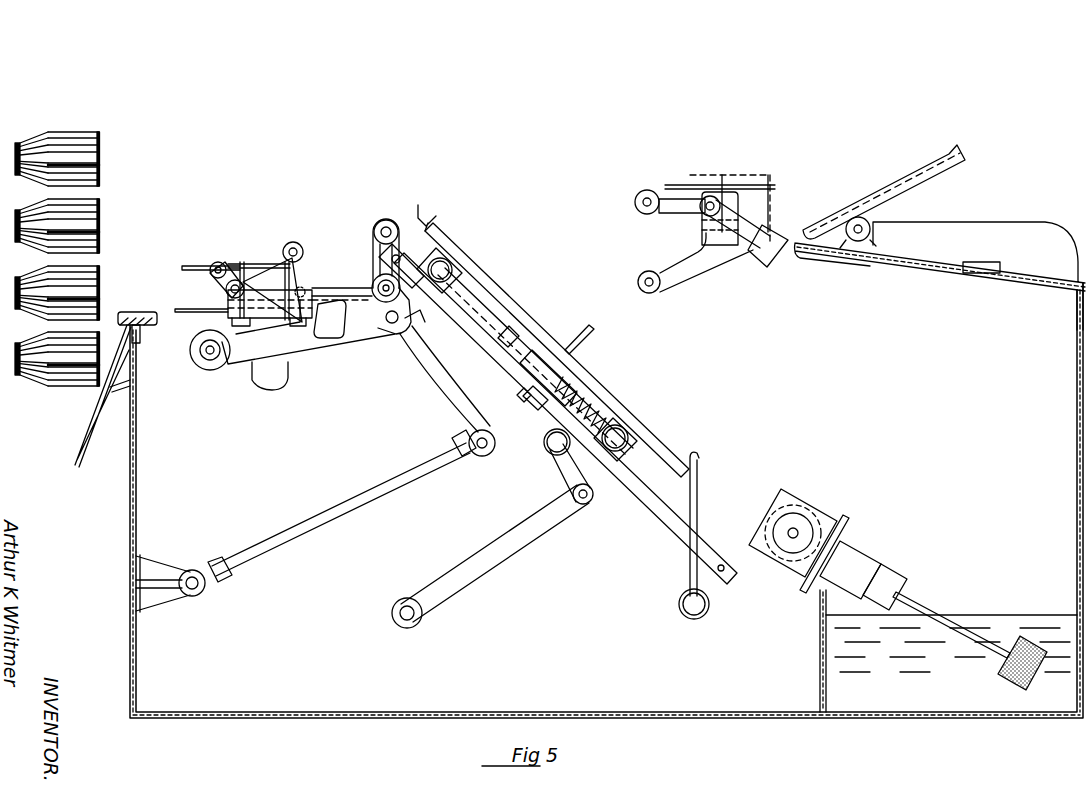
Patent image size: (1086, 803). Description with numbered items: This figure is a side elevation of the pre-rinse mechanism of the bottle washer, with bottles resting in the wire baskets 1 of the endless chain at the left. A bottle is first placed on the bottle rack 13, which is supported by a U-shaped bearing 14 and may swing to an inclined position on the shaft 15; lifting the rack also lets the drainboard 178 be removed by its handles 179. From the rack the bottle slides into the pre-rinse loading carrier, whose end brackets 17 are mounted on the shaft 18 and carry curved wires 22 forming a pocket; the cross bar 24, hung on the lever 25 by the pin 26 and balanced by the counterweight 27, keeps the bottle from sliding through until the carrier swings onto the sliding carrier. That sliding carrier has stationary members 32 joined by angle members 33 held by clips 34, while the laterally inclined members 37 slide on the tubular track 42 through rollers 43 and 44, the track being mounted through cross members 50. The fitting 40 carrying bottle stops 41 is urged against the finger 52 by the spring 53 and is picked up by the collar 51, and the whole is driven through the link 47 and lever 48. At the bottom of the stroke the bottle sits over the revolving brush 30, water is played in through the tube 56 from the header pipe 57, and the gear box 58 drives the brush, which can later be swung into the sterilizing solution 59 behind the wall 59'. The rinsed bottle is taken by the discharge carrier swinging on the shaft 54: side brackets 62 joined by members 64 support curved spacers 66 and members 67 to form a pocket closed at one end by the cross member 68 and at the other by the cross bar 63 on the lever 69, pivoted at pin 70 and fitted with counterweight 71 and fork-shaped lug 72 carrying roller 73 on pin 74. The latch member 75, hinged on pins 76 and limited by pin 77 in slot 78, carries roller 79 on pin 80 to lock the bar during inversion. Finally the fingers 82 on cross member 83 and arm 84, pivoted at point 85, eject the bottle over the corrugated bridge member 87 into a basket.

The wire basket 1 is at (35, 133).
The bottle rack 13 is at (963, 152).
The U-shaped bearing 14 is at (873, 244).
The shaft 15 is at (855, 240).
The end bracket 17 is at (670, 268).
The shaft 18 is at (662, 284).
The curved wire 22 is at (775, 205).
The cross bar 24 is at (645, 191).
The lever 25 is at (672, 203).
The pin 26 is at (712, 197).
The counterweight 27 is at (765, 262).
The brush 30 is at (1020, 640).
The stationary member 32 is at (452, 240).
The angle member 33 is at (425, 212).
The clip 34 is at (400, 230).
The laterally inclined member 37 is at (478, 298).
The fitting 40 is at (542, 362).
The bottle stop 41 is at (598, 330).
The tubular track 42 is at (660, 512).
The roller 43 is at (622, 437).
The roller 44 is at (548, 447).
The link 47 is at (560, 480).
The lever 48 is at (498, 574).
The cross member 50 is at (732, 580).
The collar 51 is at (512, 332).
The finger 52 is at (522, 397).
The spring 53 is at (598, 410).
The shaft 54 is at (382, 220).
The tube 56 is at (700, 458).
The header pipe 57 is at (694, 619).
The gear box 58 is at (800, 497).
The sterilizing solution 59 is at (951, 650).
The wall 59' is at (795, 651).
The side bracket 62 is at (372, 258).
The cross bar 63 is at (296, 243).
The member 64 is at (243, 320).
The curved spacer 66 is at (250, 266).
The member 67 is at (185, 313).
The cross member 68 is at (300, 290).
The lever 69 is at (268, 264).
The pin 70 is at (226, 289).
The counterweight 71 is at (333, 338).
The fork-shaped lug 72 is at (228, 274).
The roller 73 is at (195, 266).
The pin 74 is at (214, 264).
The latch member 75 is at (300, 368).
The pin 76 is at (374, 285).
The pin 77 is at (392, 324).
The slot 78 is at (420, 325).
The roller 79 is at (198, 362).
The pin 80 is at (210, 360).
The finger 82 is at (438, 380).
The cross member 83 is at (480, 456).
The arm 84 is at (375, 497).
The pivot point 85 is at (196, 592).
The corrugated bridge member 87 is at (125, 312).
The drainboard 178 is at (1040, 291).
The handle 179 is at (980, 274).